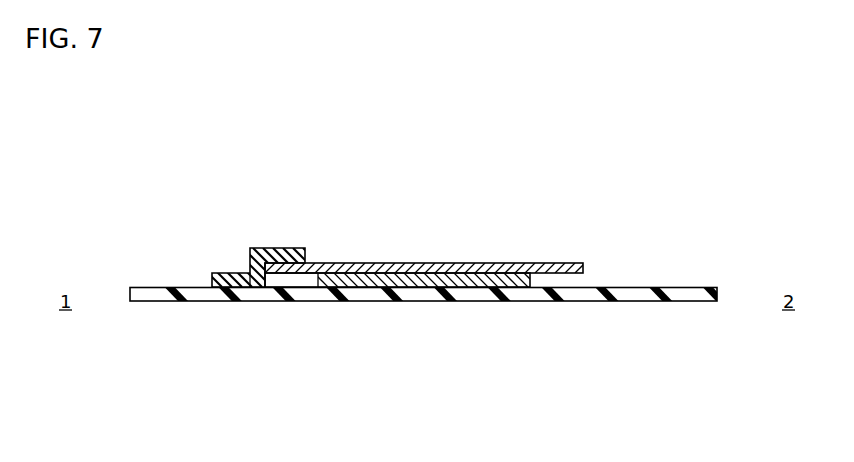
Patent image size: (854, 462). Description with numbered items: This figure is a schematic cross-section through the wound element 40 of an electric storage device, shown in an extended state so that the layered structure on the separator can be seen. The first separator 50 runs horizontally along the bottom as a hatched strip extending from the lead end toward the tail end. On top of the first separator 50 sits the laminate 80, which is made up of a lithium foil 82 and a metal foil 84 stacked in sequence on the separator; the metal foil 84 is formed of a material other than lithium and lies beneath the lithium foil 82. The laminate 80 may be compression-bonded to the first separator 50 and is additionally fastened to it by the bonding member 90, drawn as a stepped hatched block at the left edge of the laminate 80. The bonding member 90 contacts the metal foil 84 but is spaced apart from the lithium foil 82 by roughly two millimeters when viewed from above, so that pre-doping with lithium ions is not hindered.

The wound element 40 is at (673, 204).
The first separator 50 is at (632, 297).
The laminate 80 is at (585, 237).
The lithium foil 82 is at (443, 262).
The metal foil 84 is at (505, 266).
The bonding member 90 is at (270, 248).